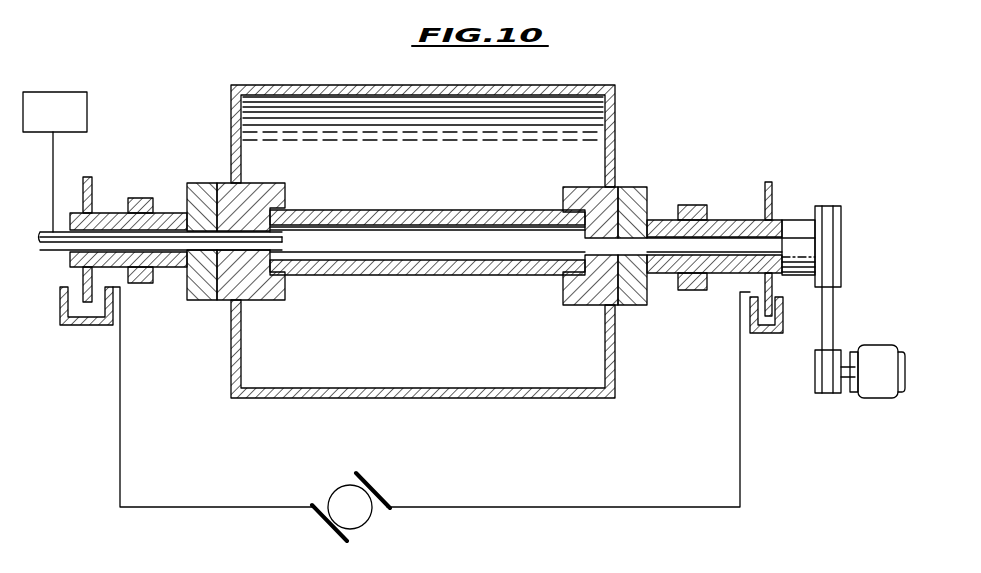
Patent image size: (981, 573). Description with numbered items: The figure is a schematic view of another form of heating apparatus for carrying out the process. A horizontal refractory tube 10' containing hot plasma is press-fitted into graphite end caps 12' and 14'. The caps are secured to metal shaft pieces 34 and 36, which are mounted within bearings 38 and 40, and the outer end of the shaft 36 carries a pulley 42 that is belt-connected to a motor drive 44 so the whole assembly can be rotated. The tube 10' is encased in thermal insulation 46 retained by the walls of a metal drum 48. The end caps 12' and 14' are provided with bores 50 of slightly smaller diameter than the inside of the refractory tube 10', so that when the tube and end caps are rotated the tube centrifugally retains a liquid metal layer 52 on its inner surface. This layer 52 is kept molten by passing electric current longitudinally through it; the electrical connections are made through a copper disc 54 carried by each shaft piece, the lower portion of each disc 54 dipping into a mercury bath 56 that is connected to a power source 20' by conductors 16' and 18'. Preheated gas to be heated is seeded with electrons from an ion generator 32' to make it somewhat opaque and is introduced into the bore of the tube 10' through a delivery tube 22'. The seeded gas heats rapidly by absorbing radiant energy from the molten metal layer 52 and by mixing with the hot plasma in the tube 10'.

The horizontal refractory tube 10' is at (427, 219).
The graphite end cap 12' is at (247, 224).
The graphite end cap 14' is at (596, 227).
The conductor 16' is at (213, 397).
The conductor 18' is at (568, 399).
The power source 20' is at (346, 499).
The delivery tube 22' is at (156, 254).
The ion generator 32' is at (67, 144).
The metal shaft piece 34 is at (172, 213).
The metal shaft piece 36 is at (726, 220).
The bearing 38 is at (143, 198).
The bearing 40 is at (691, 205).
The pulley 42 is at (841, 210).
The motor drive 44 is at (846, 340).
The thermal insulation 46 is at (436, 100).
The metal drum 48 is at (567, 79).
The bore 50 is at (282, 241).
The liquid metal layer 52 is at (399, 268).
The copper disc 54 is at (92, 183).
The mercury bath 56 is at (85, 326).